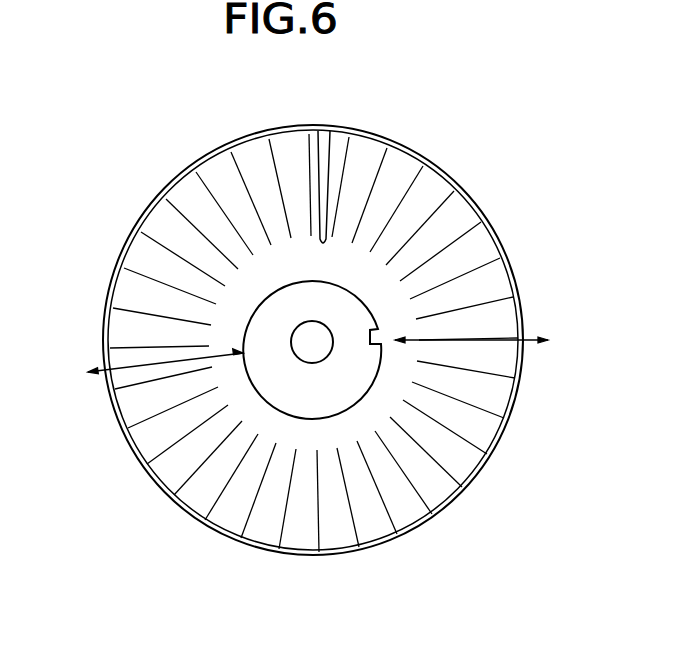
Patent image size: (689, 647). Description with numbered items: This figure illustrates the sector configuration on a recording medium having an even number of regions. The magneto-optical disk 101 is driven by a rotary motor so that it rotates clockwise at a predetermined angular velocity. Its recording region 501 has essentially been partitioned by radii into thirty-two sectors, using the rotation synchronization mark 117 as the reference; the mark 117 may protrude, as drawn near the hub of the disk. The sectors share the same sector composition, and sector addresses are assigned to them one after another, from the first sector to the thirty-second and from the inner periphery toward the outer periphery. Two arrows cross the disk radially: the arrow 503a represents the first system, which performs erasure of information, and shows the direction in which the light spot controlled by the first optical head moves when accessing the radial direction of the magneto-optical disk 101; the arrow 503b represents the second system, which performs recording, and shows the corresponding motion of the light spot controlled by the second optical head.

The magneto-optical disk 101 is at (580, 172).
The rotation synchronization mark 117 is at (372, 338).
The recording region 501 is at (333, 137).
The arrow 503a is at (548, 340).
The arrow 503b is at (88, 373).